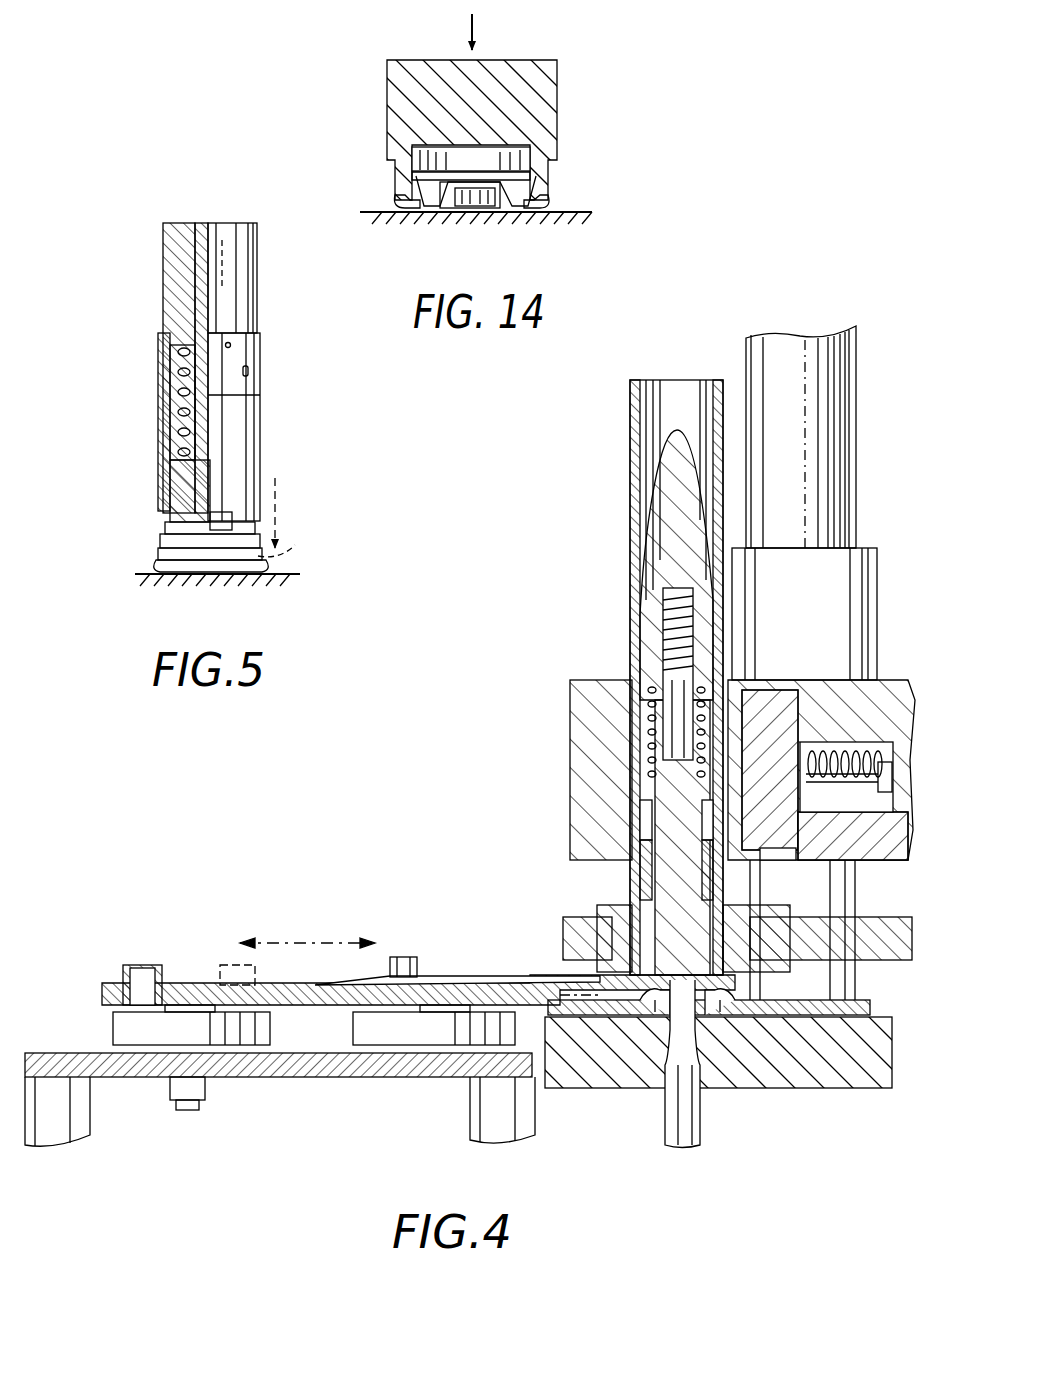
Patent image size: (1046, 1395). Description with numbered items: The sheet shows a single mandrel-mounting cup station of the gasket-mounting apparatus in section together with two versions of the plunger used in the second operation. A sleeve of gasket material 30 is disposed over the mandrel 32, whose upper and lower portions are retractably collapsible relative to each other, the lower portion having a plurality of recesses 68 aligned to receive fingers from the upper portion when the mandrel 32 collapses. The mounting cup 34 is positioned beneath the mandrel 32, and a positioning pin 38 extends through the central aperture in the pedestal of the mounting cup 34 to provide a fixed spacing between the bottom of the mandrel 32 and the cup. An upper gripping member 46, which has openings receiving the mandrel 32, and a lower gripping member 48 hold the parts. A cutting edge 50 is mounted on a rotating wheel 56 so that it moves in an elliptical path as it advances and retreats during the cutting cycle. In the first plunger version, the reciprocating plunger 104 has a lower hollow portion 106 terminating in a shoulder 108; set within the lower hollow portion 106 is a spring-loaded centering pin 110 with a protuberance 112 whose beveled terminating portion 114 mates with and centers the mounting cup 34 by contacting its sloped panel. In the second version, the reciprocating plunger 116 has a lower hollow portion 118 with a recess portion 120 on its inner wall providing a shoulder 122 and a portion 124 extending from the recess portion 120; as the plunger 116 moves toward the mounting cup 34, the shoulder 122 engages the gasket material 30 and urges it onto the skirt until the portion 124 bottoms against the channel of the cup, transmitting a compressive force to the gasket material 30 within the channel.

In FIG. 14, the gasket material 30 is at (536, 184).
In FIG. 4, the gasket material 30 is at (632, 487).
In FIG. 4, the mandrel 32 is at (640, 512).
In FIG. 14, the mounting cup 34 is at (560, 205).
In FIG. 5, the mounting cup 34 is at (158, 568).
In FIG. 4, the mounting cup 34 is at (642, 1025).
In FIG. 4, the positioning pin 38 is at (688, 1030).
In FIG. 4, the upper gripping member 46 is at (585, 760).
In FIG. 4, the lower gripping member 48 is at (575, 932).
In FIG. 4, the cutting edge 50 is at (545, 980).
In FIG. 4, the rotating wheel 56 is at (125, 1027).
In FIG. 4, the recess 68 is at (646, 832).
In FIG. 5, the plunger 104 is at (266, 390).
In FIG. 5, the lower hollow portion 106 is at (176, 437).
In FIG. 5, the shoulder 108 is at (280, 528).
In FIG. 5, the spring-loaded centering pin 110 is at (188, 485).
In FIG. 5, the protuberance 112 is at (228, 514).
In FIG. 5, the beveled terminating portion 114 is at (210, 528).
In FIG. 14, the reciprocating plunger 116 is at (566, 97).
In FIG. 14, the lower hollow portion 118 is at (520, 152).
In FIG. 14, the recess portion 120 is at (404, 196).
In FIG. 14, the shoulder 122 is at (420, 188).
In FIG. 14, the portion 124 is at (545, 175).